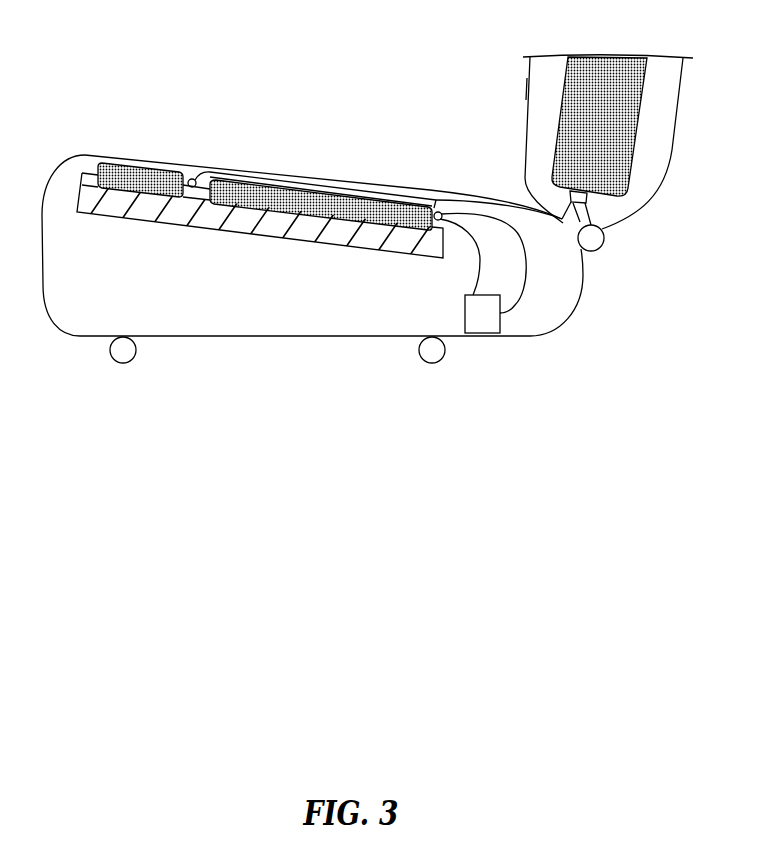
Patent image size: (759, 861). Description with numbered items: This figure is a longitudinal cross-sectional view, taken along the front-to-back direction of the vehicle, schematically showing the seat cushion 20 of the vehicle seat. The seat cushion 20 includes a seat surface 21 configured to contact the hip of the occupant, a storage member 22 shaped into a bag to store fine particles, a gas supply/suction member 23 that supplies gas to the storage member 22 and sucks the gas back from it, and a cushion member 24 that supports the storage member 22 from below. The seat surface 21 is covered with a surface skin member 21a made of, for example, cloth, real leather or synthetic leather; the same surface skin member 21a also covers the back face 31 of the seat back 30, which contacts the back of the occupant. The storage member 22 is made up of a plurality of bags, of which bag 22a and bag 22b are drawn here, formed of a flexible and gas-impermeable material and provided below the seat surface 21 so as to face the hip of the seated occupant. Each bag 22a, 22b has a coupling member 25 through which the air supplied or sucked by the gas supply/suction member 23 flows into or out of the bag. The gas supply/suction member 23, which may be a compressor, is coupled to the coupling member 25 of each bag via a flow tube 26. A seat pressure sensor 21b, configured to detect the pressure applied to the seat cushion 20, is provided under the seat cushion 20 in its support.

The seat cushion 20 is at (88, 153).
The seat surface 21 is at (339, 180).
The surface skin member 21a is at (378, 188).
The seat pressure sensor 21b is at (122, 356).
The storage member 22 is at (243, 80).
The bag 22a is at (167, 171).
The bag 22b is at (240, 183).
The gas supply/suction member 23 is at (483, 313).
The cushion member 24 is at (323, 240).
The coupling member 25 is at (437, 212).
The flow tube 26 is at (468, 201).
The seat back 30 is at (546, 63).
The back face 31 is at (528, 78).